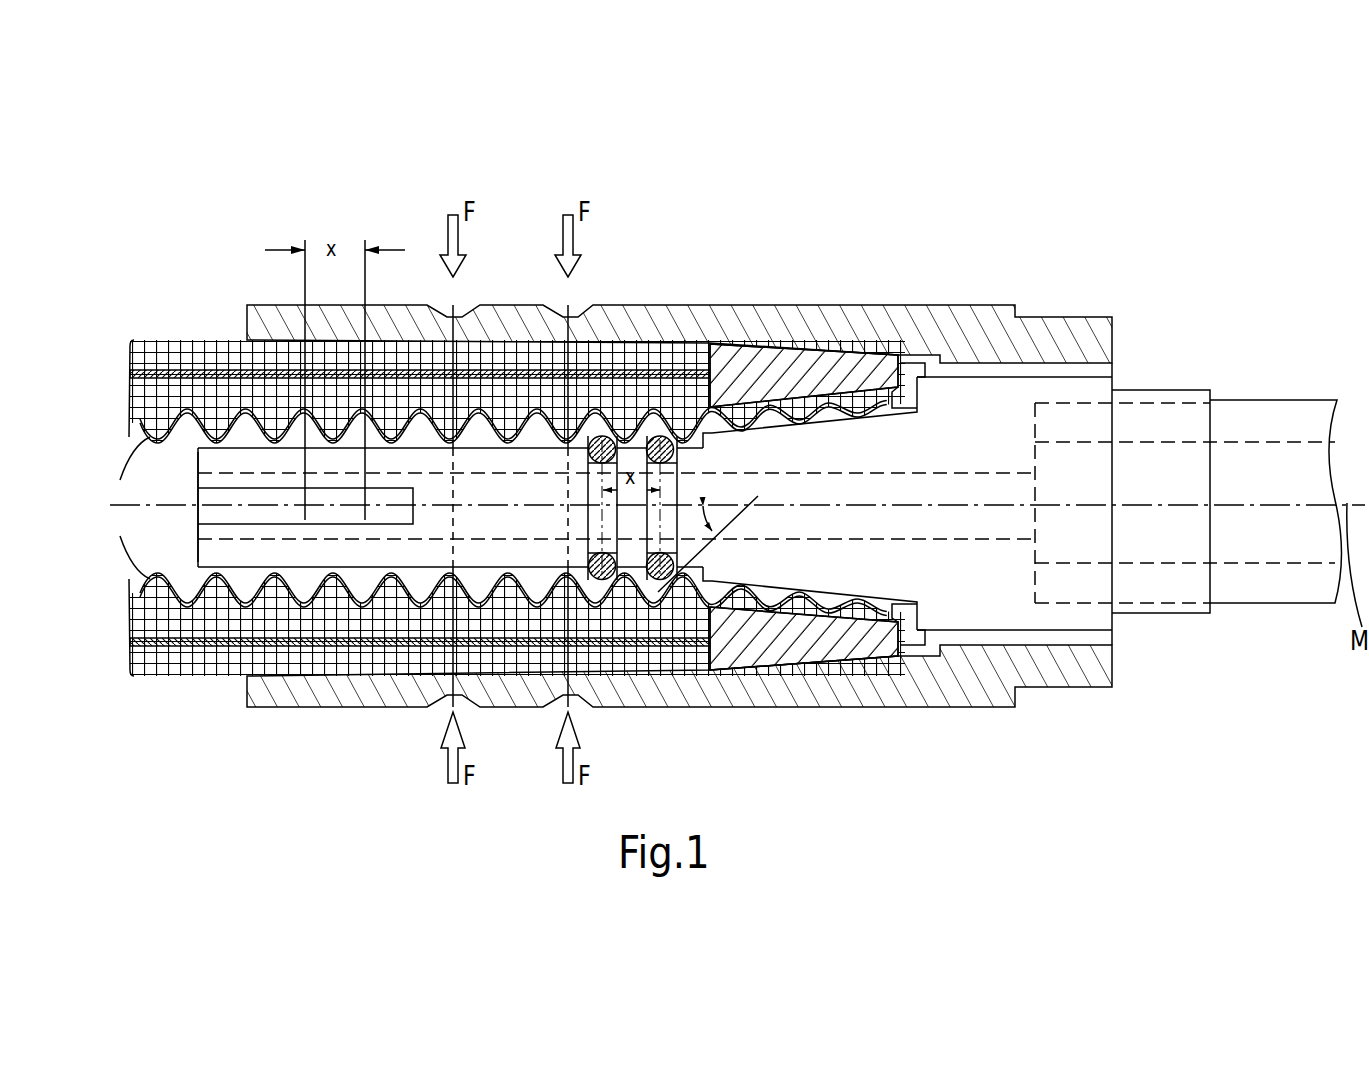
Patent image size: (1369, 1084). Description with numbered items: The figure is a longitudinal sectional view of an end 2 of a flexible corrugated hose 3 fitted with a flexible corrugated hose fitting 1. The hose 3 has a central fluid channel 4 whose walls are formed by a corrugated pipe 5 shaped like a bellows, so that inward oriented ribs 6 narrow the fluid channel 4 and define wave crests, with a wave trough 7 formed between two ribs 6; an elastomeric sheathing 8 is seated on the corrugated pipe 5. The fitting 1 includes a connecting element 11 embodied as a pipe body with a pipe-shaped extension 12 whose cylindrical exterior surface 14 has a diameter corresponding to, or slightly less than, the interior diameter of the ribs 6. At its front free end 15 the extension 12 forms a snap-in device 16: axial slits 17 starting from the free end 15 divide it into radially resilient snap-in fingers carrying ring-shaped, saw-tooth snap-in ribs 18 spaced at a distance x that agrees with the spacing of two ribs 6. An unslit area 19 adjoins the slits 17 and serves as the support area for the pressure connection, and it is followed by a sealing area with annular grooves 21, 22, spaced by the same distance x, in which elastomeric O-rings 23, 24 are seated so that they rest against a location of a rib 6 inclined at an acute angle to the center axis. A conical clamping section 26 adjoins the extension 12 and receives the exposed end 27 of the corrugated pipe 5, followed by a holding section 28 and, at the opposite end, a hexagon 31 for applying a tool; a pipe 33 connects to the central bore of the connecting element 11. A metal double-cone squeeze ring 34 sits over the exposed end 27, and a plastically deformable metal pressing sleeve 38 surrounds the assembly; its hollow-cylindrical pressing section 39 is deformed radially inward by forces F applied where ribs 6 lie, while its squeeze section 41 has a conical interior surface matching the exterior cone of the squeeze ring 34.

The flexible corrugated hose fitting 1 is at (1093, 255).
The end of the flexible corrugated hose 2 is at (240, 365).
The flexible corrugated hose 3 is at (140, 285).
The central fluid channel 4 is at (182, 553).
The corrugated pipe 5 is at (152, 451).
The ribs 6 is at (145, 562).
The wave trough 7 is at (186, 598).
The sheathing 8 is at (224, 680).
The connecting element 11 is at (952, 420).
The pipe-shaped extension 12 is at (500, 541).
The cylindrical exterior surface 14 is at (535, 548).
The free end 15 is at (192, 489).
The snap-in device 16 is at (236, 520).
The axial slits 17 is at (245, 428).
The snap-in ribs 18 is at (362, 592).
The unslit area 19 is at (509, 505).
The annular groove 21 is at (600, 517).
The annular groove 22 is at (672, 520).
The O-ring 23 is at (586, 452).
The O-ring 24 is at (677, 455).
The clamping section 26 is at (828, 577).
The exposed end of the corrugated pipe 27 is at (858, 418).
The holding section 28 is at (1018, 621).
The hexagon 31 is at (967, 490).
The pipe 33 is at (1258, 423).
The squeeze ring 34 is at (803, 370).
The pressing sleeve 38 is at (895, 305).
The pressing section 39 is at (645, 275).
The squeeze section 41 is at (783, 275).